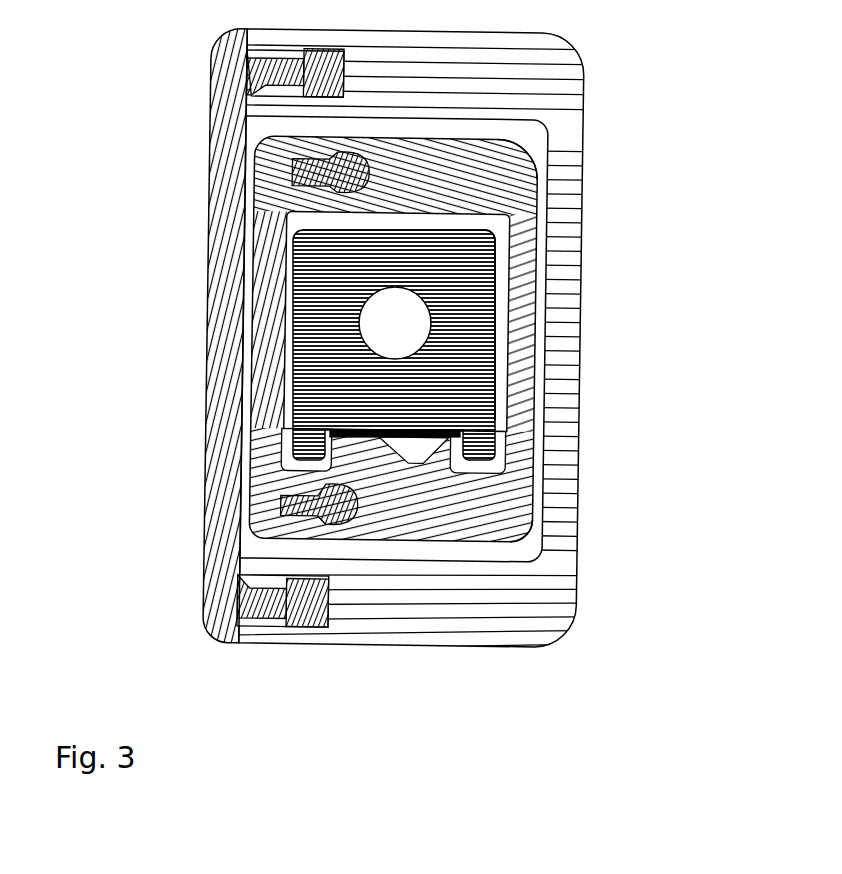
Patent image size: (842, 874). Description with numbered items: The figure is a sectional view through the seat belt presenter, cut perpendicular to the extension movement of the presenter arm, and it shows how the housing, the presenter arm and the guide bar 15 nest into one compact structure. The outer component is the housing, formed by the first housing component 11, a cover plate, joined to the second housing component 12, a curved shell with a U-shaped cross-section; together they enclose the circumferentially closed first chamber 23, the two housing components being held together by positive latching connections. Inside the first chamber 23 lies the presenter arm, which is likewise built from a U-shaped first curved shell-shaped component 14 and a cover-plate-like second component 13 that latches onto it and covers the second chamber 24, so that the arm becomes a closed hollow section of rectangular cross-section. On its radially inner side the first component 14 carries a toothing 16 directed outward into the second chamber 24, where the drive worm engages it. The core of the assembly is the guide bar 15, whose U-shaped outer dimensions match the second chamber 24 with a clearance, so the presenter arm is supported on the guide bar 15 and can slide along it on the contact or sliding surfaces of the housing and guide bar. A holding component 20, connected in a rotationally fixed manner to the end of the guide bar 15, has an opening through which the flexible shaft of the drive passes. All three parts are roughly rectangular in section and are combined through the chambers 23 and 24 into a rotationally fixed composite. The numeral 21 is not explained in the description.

The first housing component 11 is at (218, 345).
The second housing component 12 is at (568, 295).
The second component 13 is at (268, 240).
The first curved shell-shaped component 14 is at (520, 180).
The guide bar 15 is at (305, 300).
The toothing 16 is at (300, 462).
The holding component 20 is at (305, 300).
The sealing membrane 21 is at (448, 432).
The first chamber 23 is at (527, 532).
The second chamber 24 is at (498, 357).